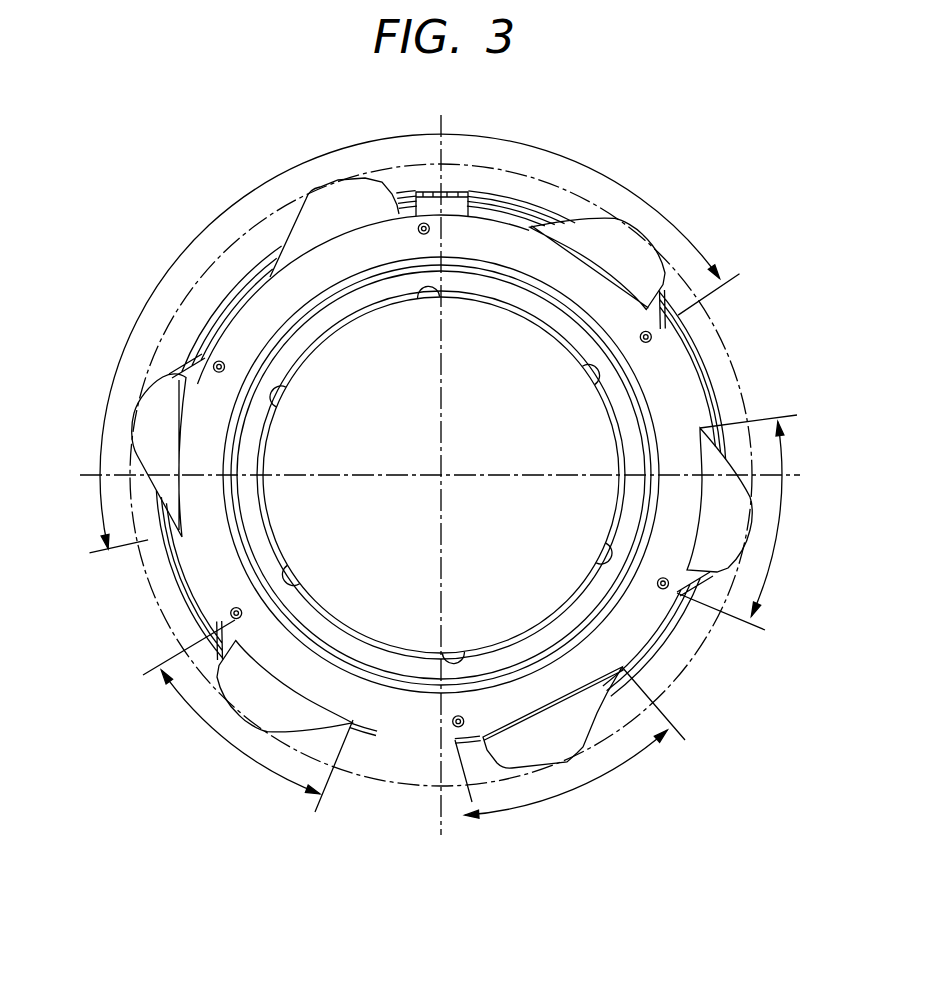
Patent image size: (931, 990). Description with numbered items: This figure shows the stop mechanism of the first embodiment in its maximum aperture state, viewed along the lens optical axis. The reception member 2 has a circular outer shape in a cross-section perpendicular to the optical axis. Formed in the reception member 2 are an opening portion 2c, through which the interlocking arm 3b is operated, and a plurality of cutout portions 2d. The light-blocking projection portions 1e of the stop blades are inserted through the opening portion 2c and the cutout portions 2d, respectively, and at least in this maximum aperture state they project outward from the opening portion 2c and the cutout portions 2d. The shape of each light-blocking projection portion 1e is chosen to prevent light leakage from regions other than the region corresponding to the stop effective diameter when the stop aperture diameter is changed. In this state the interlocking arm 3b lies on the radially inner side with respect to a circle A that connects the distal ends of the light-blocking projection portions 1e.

The light-blocking projection portion 1e is at (330, 200).
The reception member 2 is at (675, 360).
The opening portion 2c is at (209, 228).
The cutout portion 2d is at (778, 551).
The interlocking arm 3b is at (453, 196).
The circle connecting distal ends of the light-blocking projection portions A is at (152, 593).